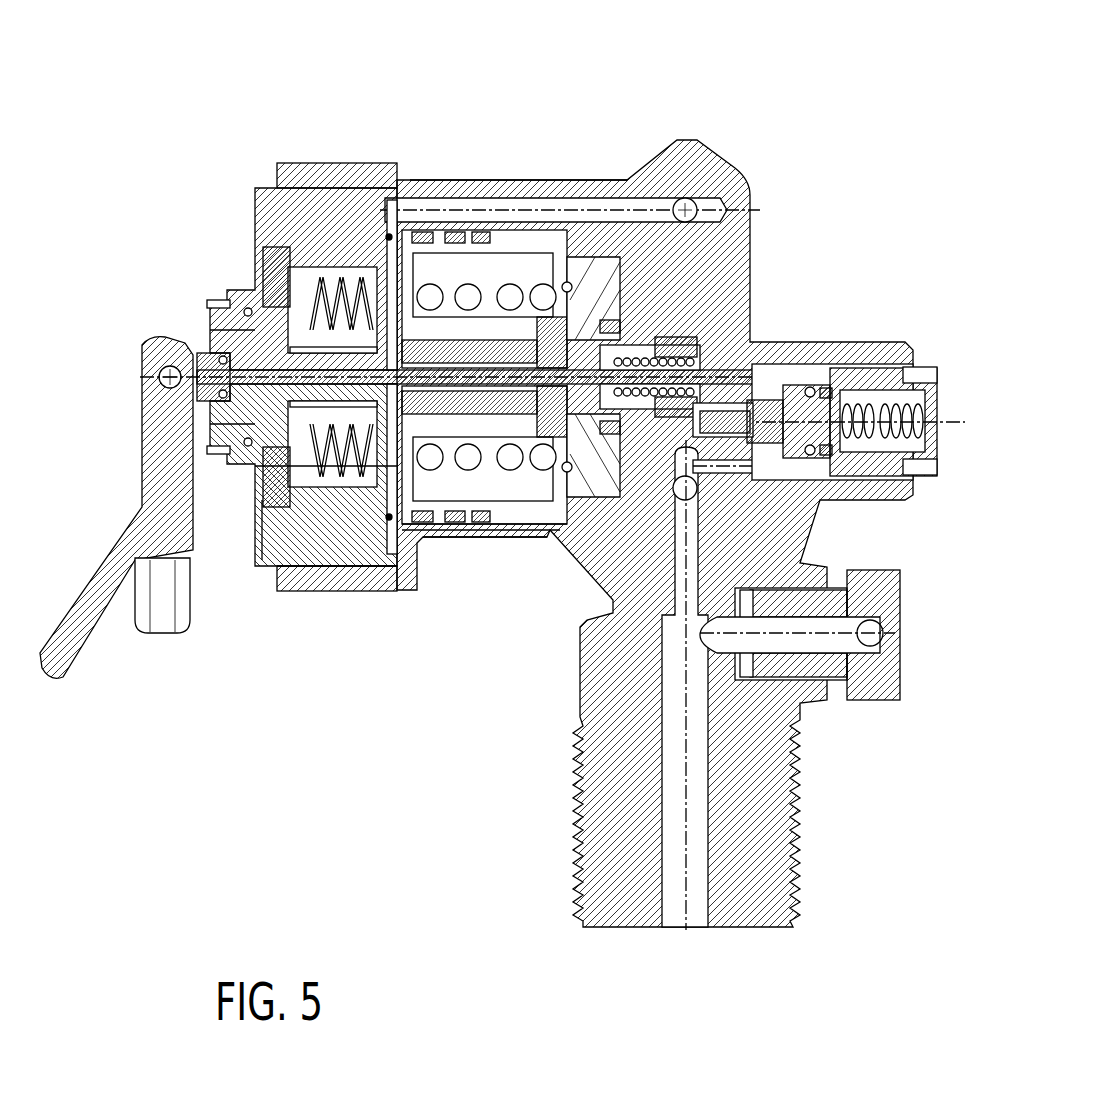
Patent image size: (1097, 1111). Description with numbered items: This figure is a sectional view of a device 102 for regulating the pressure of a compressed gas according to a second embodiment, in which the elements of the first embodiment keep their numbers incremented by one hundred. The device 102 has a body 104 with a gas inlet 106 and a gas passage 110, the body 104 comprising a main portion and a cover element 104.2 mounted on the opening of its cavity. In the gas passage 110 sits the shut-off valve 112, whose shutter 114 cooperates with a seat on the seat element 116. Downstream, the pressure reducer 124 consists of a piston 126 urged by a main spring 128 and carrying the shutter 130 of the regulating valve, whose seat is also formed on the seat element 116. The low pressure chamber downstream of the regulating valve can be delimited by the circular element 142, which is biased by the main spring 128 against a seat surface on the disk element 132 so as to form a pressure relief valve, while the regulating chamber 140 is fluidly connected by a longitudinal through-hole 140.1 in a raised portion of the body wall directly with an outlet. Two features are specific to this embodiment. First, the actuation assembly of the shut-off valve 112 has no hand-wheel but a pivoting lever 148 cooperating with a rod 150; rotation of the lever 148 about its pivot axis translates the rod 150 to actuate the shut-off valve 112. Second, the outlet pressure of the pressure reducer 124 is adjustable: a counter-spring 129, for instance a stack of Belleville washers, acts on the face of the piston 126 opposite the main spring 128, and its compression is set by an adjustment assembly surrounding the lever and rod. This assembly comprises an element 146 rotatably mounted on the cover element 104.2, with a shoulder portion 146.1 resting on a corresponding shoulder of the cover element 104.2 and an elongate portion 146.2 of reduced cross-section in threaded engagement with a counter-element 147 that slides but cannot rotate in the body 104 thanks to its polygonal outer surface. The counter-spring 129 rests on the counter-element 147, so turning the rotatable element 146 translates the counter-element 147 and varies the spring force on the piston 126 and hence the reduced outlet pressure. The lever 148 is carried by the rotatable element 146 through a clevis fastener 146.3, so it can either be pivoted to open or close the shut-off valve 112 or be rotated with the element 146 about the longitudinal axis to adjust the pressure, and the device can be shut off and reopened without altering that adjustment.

The device 102 is at (785, 148).
The body 104 is at (900, 318).
The cover element 104.2 is at (272, 222).
The gas inlet 106 is at (688, 880).
The gas passage 110 is at (640, 470).
The shut-off valve 112 is at (656, 108).
The shutter 114 is at (636, 368).
The seat element 116 is at (605, 335).
The pressure reducer 124 is at (438, 552).
The piston 126 is at (468, 540).
The main spring 128 is at (462, 292).
The counter-spring 129 is at (322, 560).
The shutter 130 is at (484, 470).
The disk element 132 is at (575, 290).
The regulating chamber 140 is at (389, 232).
The outer surface 140.1 is at (440, 178).
The circular element 142 is at (540, 290).
The rotatable element 146 is at (222, 330).
The shoulder portion 146.1 is at (312, 470).
The elongate portion 146.2 is at (268, 296).
The clevis fastener 146.3 is at (212, 308).
The counter-element 147 is at (305, 288).
The pivoting lever 148 is at (155, 356).
The rod 150 is at (250, 425).